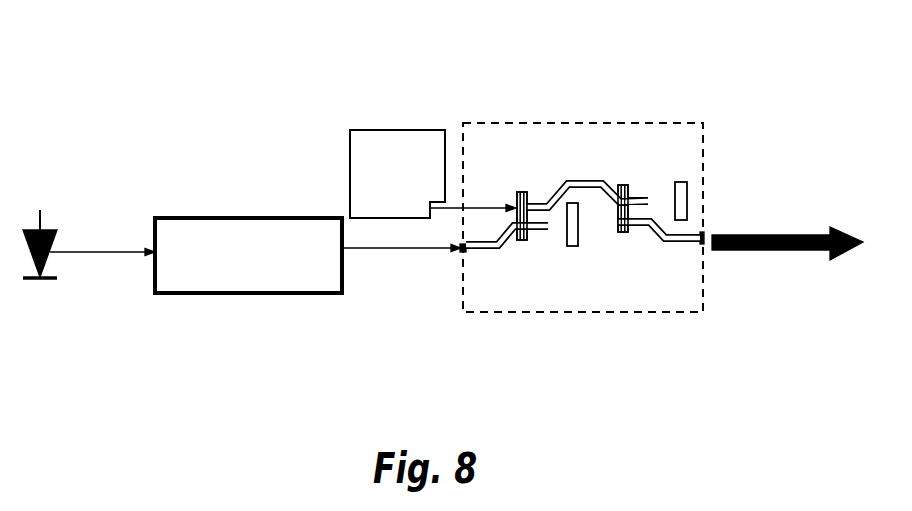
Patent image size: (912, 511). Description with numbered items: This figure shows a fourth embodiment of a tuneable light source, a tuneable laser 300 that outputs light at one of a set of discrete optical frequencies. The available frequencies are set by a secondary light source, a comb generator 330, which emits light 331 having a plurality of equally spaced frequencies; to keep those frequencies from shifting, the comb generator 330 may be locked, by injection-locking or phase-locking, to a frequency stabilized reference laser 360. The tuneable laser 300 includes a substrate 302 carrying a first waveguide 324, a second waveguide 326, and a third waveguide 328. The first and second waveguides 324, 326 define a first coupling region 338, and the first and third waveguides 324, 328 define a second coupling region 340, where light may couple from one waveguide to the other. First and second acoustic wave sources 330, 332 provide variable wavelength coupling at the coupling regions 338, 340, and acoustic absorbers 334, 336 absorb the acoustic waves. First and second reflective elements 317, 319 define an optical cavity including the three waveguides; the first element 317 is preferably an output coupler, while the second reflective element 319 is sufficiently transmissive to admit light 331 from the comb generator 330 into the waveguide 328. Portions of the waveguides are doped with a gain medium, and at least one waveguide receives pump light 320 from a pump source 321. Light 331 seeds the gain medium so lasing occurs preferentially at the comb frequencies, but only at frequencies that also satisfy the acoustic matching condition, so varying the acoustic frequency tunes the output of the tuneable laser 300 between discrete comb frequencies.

The tuneable laser 300 is at (596, 92).
The substrate 302 is at (668, 118).
The first reflective element 317 is at (707, 230).
The second reflective element 319 is at (458, 253).
The pump light 320 is at (455, 205).
The pump source 321 is at (375, 130).
The first waveguide 324 is at (588, 180).
The second waveguide 326 is at (660, 243).
The third waveguide 328 is at (488, 252).
The comb generator 330 is at (253, 217).
The light 331 is at (362, 252).
The second acoustic wave source 332 is at (522, 192).
The acoustic absorber 334 is at (685, 185).
The acoustic absorber 336 is at (570, 247).
The first coupling region 338 is at (652, 209).
The second coupling region 340 is at (557, 220).
The frequency stabilized reference laser 360 is at (55, 230).